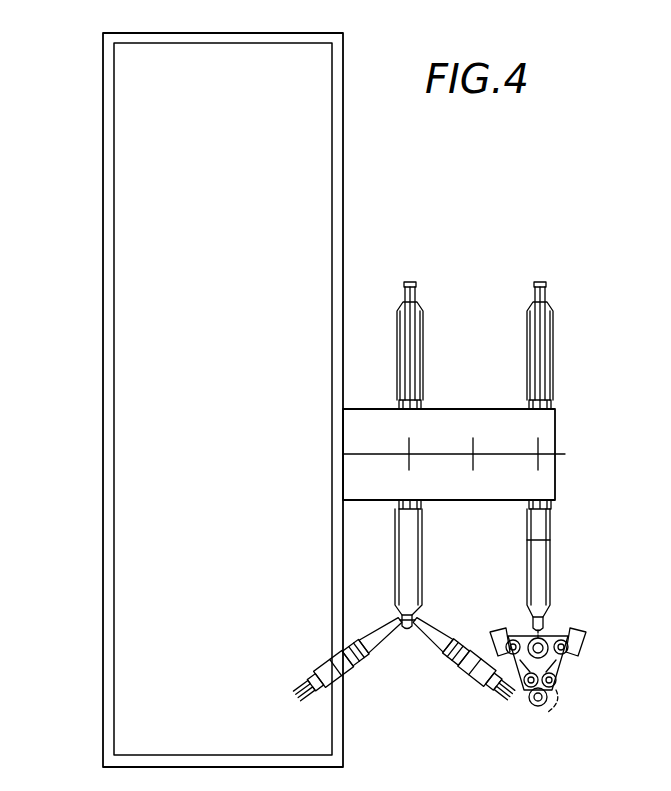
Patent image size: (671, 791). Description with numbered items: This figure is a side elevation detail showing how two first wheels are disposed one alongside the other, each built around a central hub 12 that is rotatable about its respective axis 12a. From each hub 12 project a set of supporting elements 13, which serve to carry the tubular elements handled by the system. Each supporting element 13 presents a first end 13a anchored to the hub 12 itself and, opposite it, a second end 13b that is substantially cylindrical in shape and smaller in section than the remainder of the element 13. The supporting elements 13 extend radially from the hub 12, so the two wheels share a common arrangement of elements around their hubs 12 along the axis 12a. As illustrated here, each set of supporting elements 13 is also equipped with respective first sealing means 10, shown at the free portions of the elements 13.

The first sealing means 10 is at (426, 668).
The central hub 12 is at (546, 477).
The axis 12a is at (540, 443).
The supporting element 13 is at (426, 310).
The first end 13a is at (398, 393).
The second end 13b is at (403, 305).